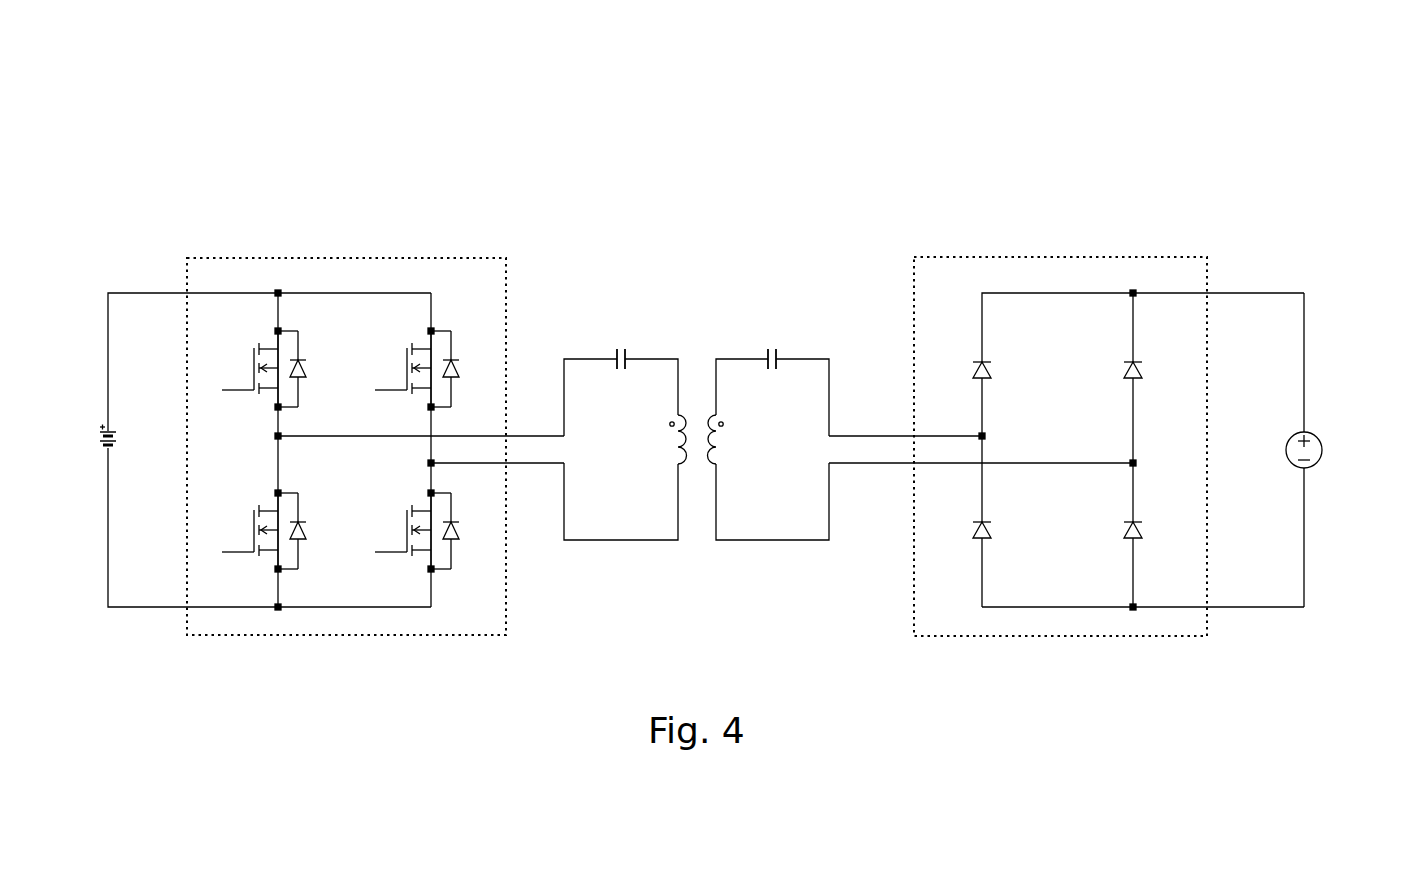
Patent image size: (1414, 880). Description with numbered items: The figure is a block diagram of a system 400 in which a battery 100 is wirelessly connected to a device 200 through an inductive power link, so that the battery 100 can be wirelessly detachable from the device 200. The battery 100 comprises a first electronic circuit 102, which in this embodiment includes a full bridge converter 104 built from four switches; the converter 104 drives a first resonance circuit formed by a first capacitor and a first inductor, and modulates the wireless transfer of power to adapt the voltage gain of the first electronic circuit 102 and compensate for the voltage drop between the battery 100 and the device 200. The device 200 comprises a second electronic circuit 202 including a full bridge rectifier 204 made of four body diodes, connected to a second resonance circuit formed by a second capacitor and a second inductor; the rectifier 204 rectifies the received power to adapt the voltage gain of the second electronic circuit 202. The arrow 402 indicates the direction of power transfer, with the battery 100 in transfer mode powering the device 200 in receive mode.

The battery 100 is at (72, 453).
The first electronic circuit 102 is at (494, 303).
The full bridge converter 104 is at (257, 258).
The device 200 is at (1395, 458).
The second electronic circuit 202 is at (972, 298).
The full bridge rectifier 204 is at (1102, 257).
The system 400 is at (1010, 136).
The arrow indicating transfer mode 402 is at (806, 233).